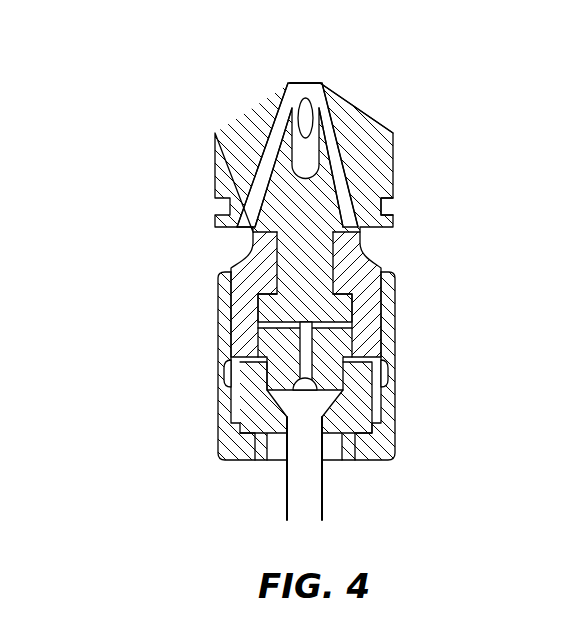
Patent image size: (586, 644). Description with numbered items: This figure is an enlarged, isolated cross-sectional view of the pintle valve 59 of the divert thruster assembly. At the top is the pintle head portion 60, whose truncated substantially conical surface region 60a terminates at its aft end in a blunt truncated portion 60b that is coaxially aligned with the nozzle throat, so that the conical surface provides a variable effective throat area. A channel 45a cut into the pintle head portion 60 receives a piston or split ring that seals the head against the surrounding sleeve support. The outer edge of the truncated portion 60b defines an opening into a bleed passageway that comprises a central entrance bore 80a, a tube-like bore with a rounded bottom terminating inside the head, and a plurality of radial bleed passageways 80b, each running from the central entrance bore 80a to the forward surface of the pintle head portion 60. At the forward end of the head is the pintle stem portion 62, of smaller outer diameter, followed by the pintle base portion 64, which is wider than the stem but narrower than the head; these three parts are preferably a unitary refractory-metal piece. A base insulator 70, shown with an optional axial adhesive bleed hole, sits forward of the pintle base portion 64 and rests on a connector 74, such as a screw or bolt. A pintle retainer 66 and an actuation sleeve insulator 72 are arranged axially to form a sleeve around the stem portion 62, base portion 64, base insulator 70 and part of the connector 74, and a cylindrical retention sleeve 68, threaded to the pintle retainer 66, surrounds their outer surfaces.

The pintle valve 59 is at (166, 123).
The pintle head portion 60 is at (293, 322).
The truncated substantially conical surface region 60a is at (351, 92).
The blunt truncated portion 60b is at (303, 82).
The central entrance bore 80a is at (291, 97).
The radial bleed passageways 80b is at (336, 160).
The channel 45a is at (393, 213).
The pintle stem portion 62 is at (293, 252).
The pintle base portion 64 is at (268, 308).
The pintle retainer 66 is at (377, 258).
The cylindrical retention sleeve 68 is at (386, 388).
The base insulator 70 is at (341, 338).
The actuation sleeve insulator 72 is at (349, 405).
The connector 74 is at (301, 488).